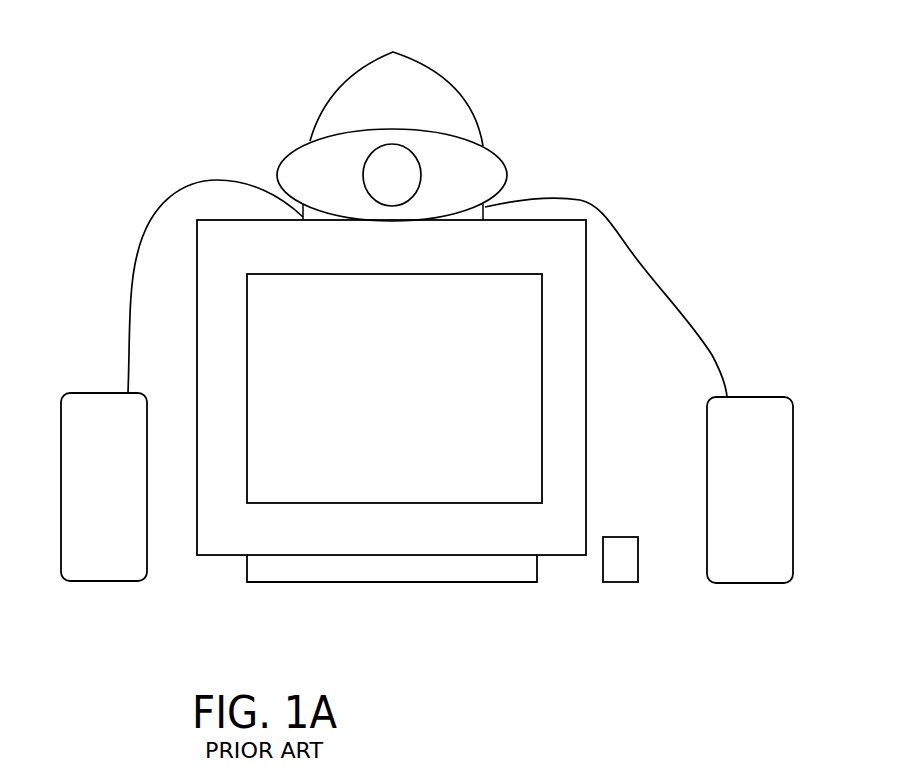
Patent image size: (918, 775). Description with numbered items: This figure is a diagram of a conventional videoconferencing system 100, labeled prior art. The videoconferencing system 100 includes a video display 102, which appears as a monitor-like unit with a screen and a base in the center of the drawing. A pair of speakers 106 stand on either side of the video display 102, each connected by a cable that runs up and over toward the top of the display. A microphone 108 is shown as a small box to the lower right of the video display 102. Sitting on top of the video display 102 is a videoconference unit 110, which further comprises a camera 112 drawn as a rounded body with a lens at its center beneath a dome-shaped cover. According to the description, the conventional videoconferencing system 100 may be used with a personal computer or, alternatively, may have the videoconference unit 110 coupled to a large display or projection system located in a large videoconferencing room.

The videoconferencing system 100 is at (419, 622).
The video display 102 is at (586, 378).
The speakers 106 is at (92, 390).
The microphone 108 is at (620, 535).
The videoconference unit 110 is at (427, 63).
The camera 112 is at (395, 127).